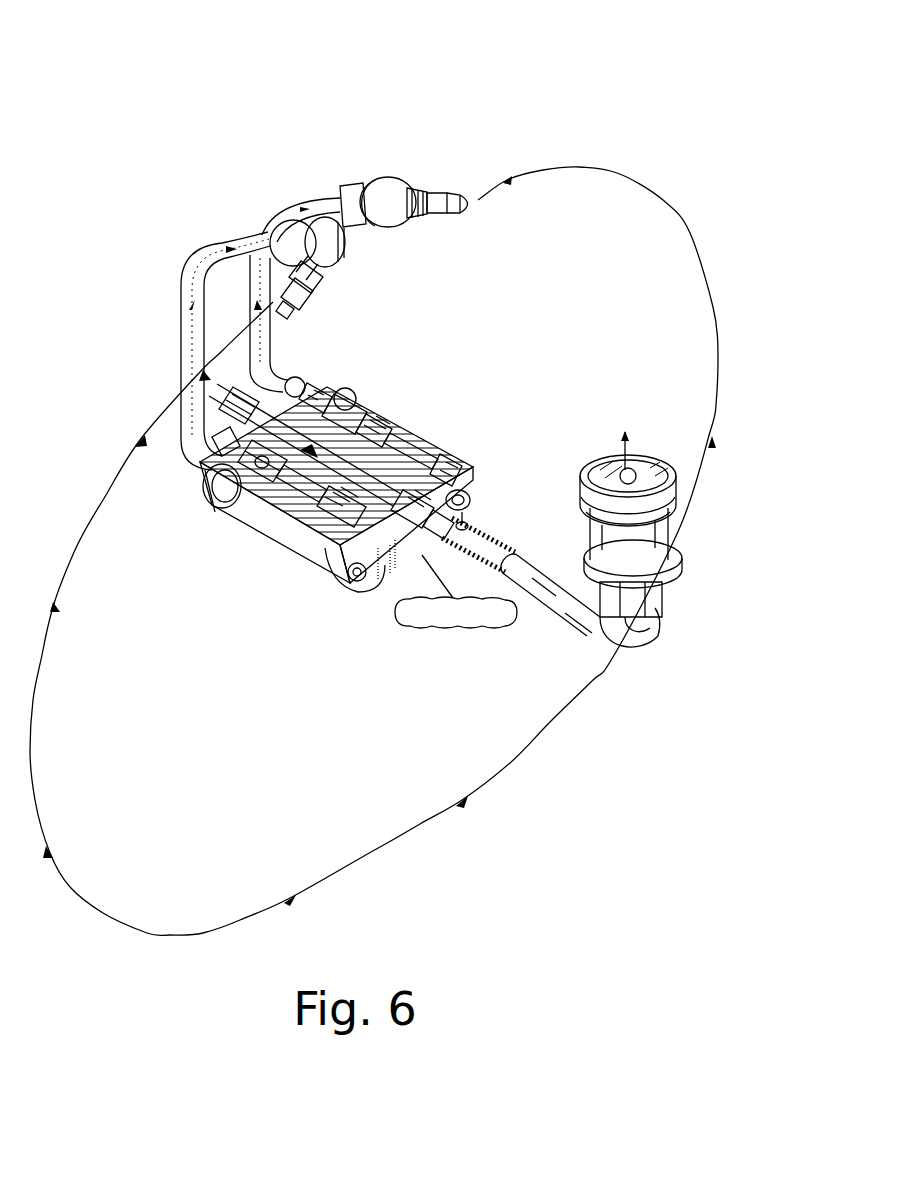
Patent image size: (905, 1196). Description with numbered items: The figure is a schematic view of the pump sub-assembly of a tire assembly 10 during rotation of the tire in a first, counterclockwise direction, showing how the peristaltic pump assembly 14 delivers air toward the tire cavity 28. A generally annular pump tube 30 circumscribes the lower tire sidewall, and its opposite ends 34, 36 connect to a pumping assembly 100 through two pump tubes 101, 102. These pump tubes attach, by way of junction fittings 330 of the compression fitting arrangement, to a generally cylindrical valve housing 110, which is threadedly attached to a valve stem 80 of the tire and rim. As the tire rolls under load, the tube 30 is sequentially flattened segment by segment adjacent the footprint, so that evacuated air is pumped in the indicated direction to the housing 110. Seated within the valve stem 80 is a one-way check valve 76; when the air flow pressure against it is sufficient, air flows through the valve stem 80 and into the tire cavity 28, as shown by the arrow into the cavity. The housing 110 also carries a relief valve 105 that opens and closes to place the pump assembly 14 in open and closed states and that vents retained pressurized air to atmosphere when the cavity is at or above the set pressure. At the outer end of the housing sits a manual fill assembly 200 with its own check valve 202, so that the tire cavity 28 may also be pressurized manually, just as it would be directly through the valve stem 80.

The tire assembly 10 is at (82, 105).
The peristaltic pump assembly 14 is at (127, 153).
The pump tube 30 is at (587, 163).
The tire cavity 28 is at (631, 372).
The tube end 34 is at (473, 193).
The tube end 36 is at (278, 307).
The one-way check valve 76 is at (445, 492).
The valve stem 80 is at (560, 597).
The pumping assembly 100 is at (170, 185).
The pump tube 101 is at (290, 203).
The pump tube 102 is at (193, 272).
The relief valve 105 is at (268, 470).
The valve housing 110 is at (393, 430).
The manual fill assembly 200 is at (220, 375).
The check valve 202 is at (283, 383).
The junction fittings 330 is at (333, 248).